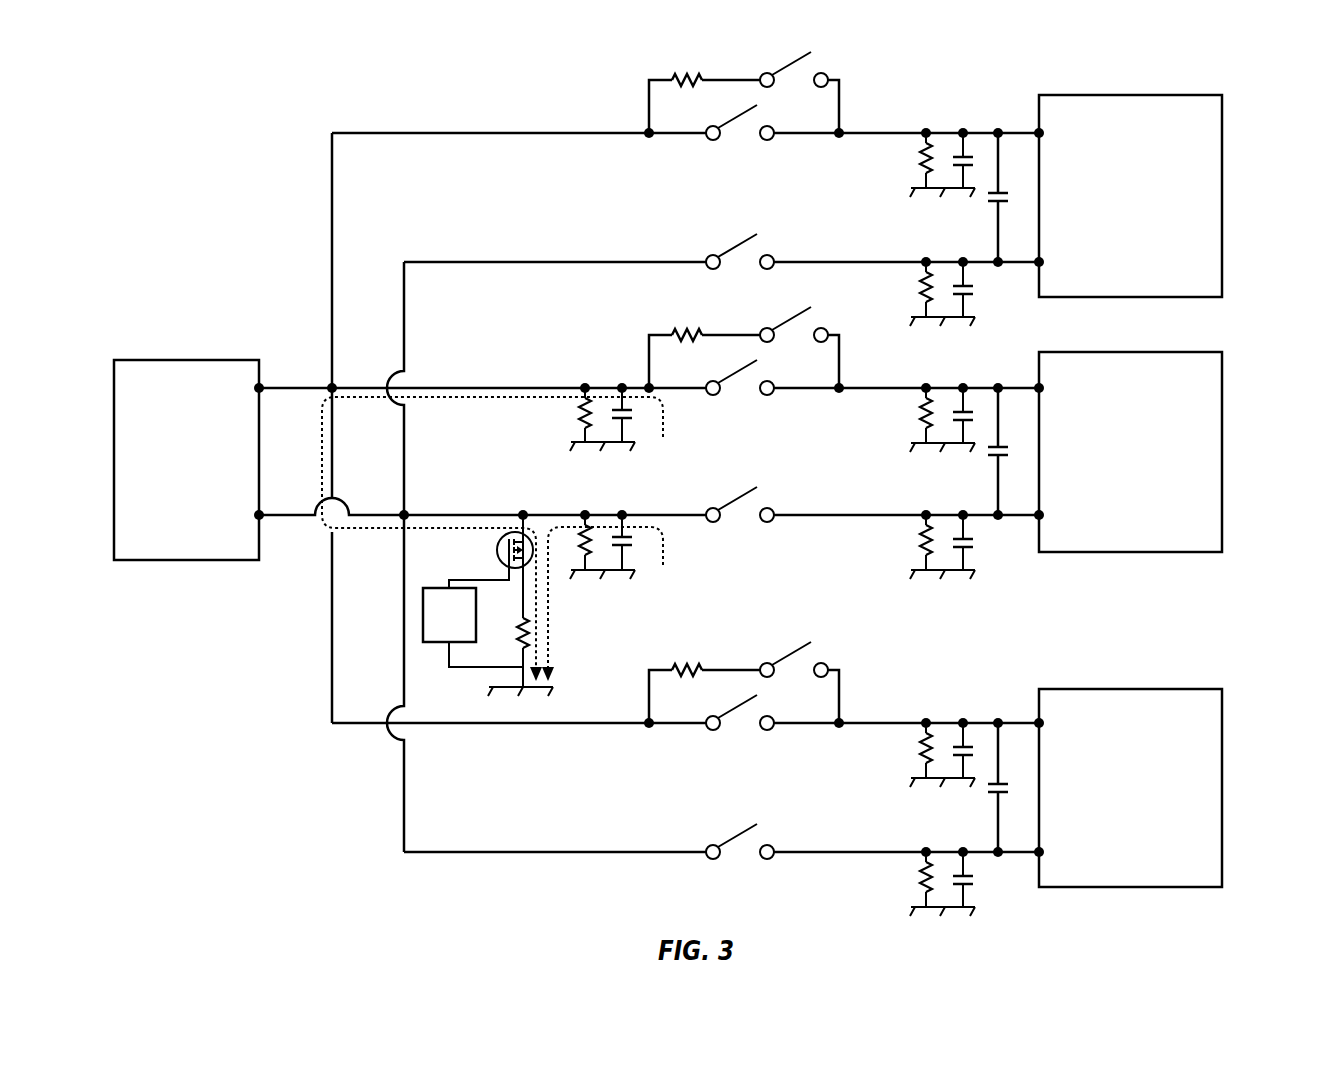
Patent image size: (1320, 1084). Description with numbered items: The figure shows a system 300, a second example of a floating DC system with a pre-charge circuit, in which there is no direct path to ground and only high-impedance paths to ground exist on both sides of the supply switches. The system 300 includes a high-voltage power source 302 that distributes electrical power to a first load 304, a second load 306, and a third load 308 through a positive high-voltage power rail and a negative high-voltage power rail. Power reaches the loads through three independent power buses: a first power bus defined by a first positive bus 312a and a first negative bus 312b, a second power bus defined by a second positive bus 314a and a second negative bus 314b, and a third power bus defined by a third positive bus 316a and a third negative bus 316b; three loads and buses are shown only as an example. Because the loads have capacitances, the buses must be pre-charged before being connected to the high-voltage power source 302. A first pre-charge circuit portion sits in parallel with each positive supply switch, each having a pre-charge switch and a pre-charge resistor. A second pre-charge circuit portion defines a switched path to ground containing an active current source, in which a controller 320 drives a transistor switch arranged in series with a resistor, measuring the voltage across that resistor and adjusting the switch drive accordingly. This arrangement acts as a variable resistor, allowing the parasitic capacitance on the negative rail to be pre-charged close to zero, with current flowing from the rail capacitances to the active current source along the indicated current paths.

The system 300 is at (230, 205).
The high-voltage power source 302 is at (187, 563).
The first load 304 is at (1222, 198).
The second load 306 is at (1222, 453).
The third load 308 is at (1222, 788).
The first positive bus 312a is at (875, 133).
The first negative bus 312b is at (875, 260).
The second positive bus 314a is at (875, 387).
The second negative bus 314b is at (875, 514).
The third positive bus 316a is at (875, 722).
The third negative bus 316b is at (875, 851).
The controller 320 is at (423, 609).